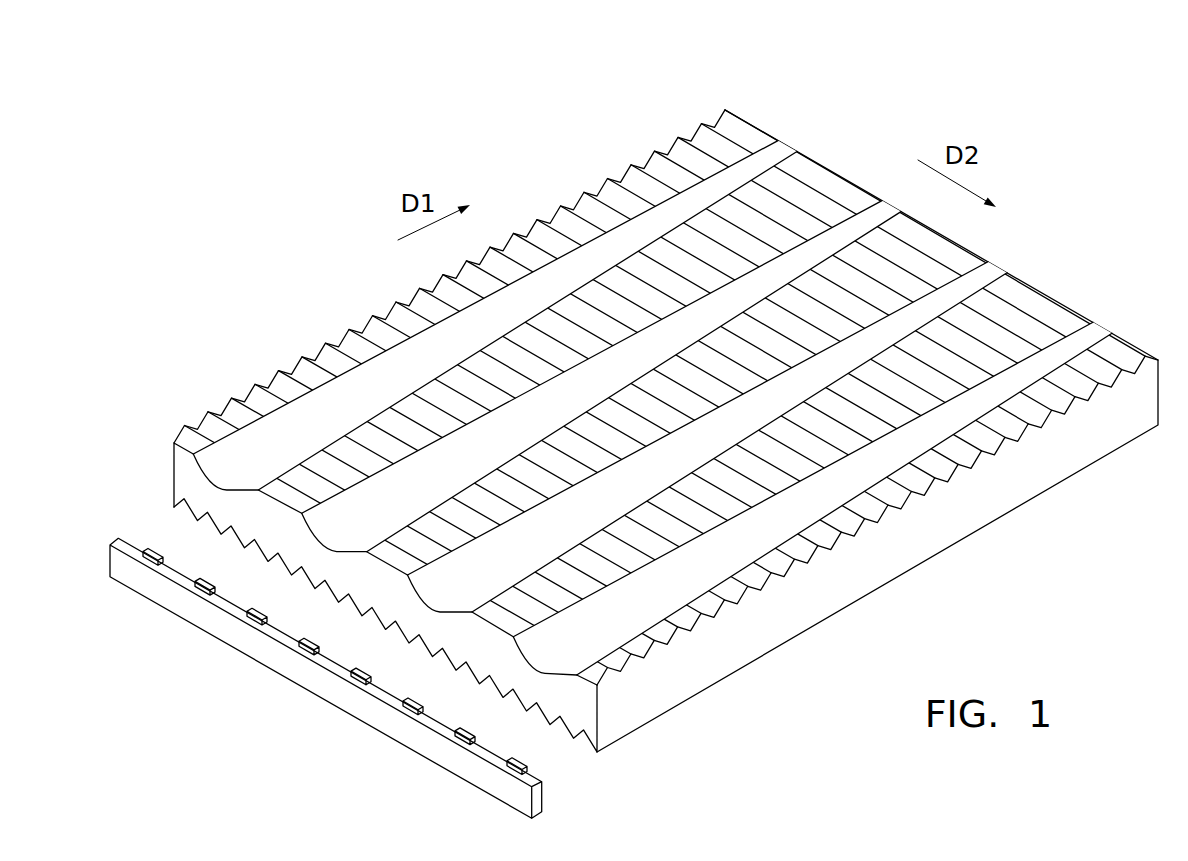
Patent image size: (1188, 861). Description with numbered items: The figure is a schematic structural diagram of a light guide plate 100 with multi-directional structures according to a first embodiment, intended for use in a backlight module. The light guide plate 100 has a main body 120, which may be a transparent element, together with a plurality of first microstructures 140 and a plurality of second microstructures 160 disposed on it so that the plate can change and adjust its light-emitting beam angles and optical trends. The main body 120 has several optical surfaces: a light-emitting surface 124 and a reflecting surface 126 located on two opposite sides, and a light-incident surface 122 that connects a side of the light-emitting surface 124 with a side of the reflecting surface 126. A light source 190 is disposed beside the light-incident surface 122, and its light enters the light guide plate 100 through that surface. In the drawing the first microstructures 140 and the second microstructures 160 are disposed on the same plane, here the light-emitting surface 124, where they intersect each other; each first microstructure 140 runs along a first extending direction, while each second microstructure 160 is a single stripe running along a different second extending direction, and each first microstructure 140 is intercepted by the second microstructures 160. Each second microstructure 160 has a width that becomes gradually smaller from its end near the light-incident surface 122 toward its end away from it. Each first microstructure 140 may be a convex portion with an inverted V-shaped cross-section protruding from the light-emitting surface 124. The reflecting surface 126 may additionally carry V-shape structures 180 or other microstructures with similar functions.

The light guide plate 100 is at (634, 126).
The main body 120 is at (990, 508).
The light-incident surface 122 is at (184, 478).
The light-emitting surface 124 is at (1024, 332).
The reflecting surface 126 is at (722, 697).
The first microstructures 140 is at (780, 213).
The second microstructures 160 is at (762, 165).
The V-shape structures 180 is at (165, 505).
The light source 190 is at (300, 675).